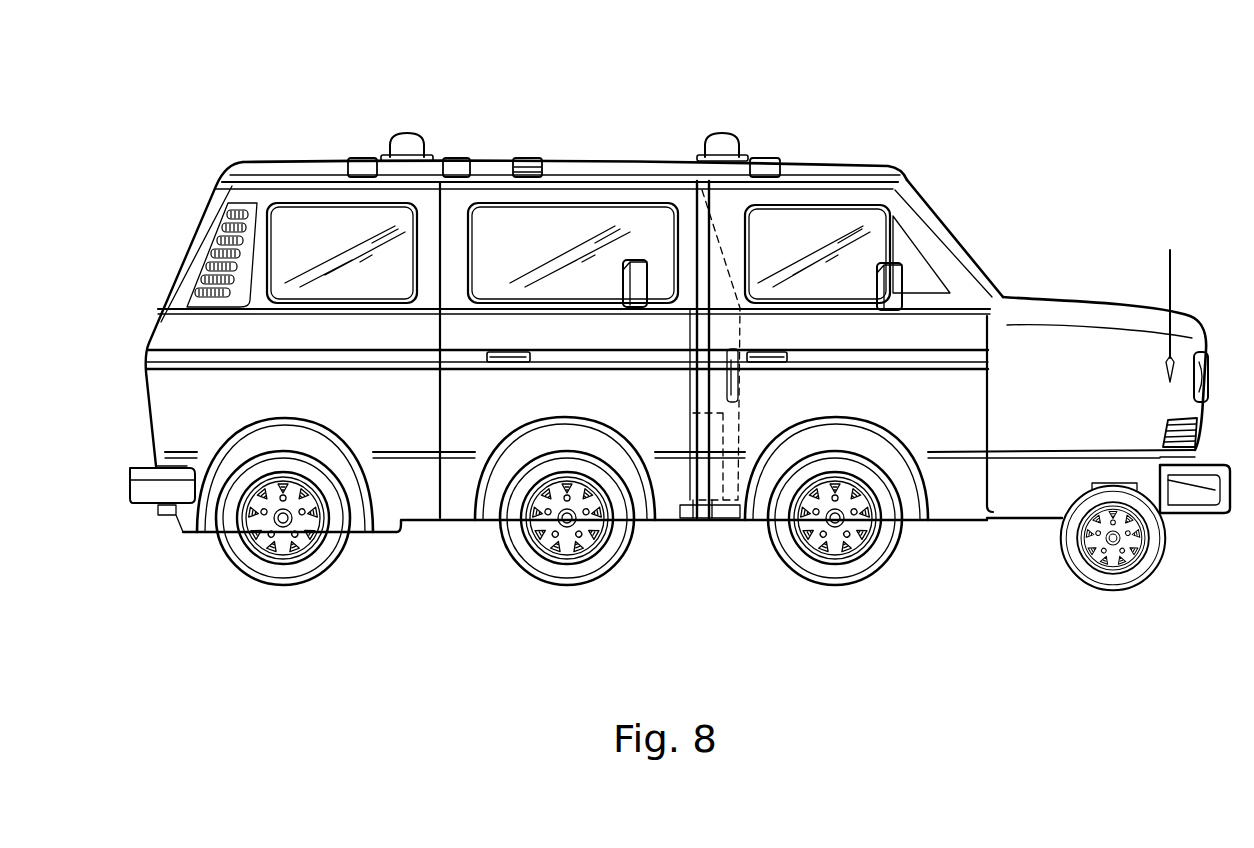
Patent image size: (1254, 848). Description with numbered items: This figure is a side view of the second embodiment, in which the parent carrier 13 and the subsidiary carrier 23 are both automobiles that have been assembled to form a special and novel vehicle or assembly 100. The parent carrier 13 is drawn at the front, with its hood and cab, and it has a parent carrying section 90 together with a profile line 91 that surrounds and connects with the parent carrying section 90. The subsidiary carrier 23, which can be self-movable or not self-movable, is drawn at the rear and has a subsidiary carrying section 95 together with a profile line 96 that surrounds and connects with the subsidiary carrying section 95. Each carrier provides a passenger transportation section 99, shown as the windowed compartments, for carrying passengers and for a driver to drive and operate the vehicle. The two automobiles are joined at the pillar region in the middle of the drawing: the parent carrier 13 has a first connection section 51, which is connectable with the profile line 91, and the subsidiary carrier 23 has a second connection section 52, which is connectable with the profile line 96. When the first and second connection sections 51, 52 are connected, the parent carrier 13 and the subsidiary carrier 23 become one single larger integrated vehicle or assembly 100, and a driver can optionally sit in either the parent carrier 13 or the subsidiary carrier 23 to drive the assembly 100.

The vehicle or assembly 100 is at (662, 346).
The profile line 96 is at (613, 158).
The passenger transportation section 99 is at (813, 222).
The profile line 91 is at (837, 162).
The subsidiary carrier 23 is at (182, 237).
The parent carrier 13 is at (1040, 303).
The subsidiary carrying section 95 is at (462, 462).
The second connection section 52 is at (684, 523).
The first connection section 51 is at (757, 493).
The parent carrying section 90 is at (947, 463).